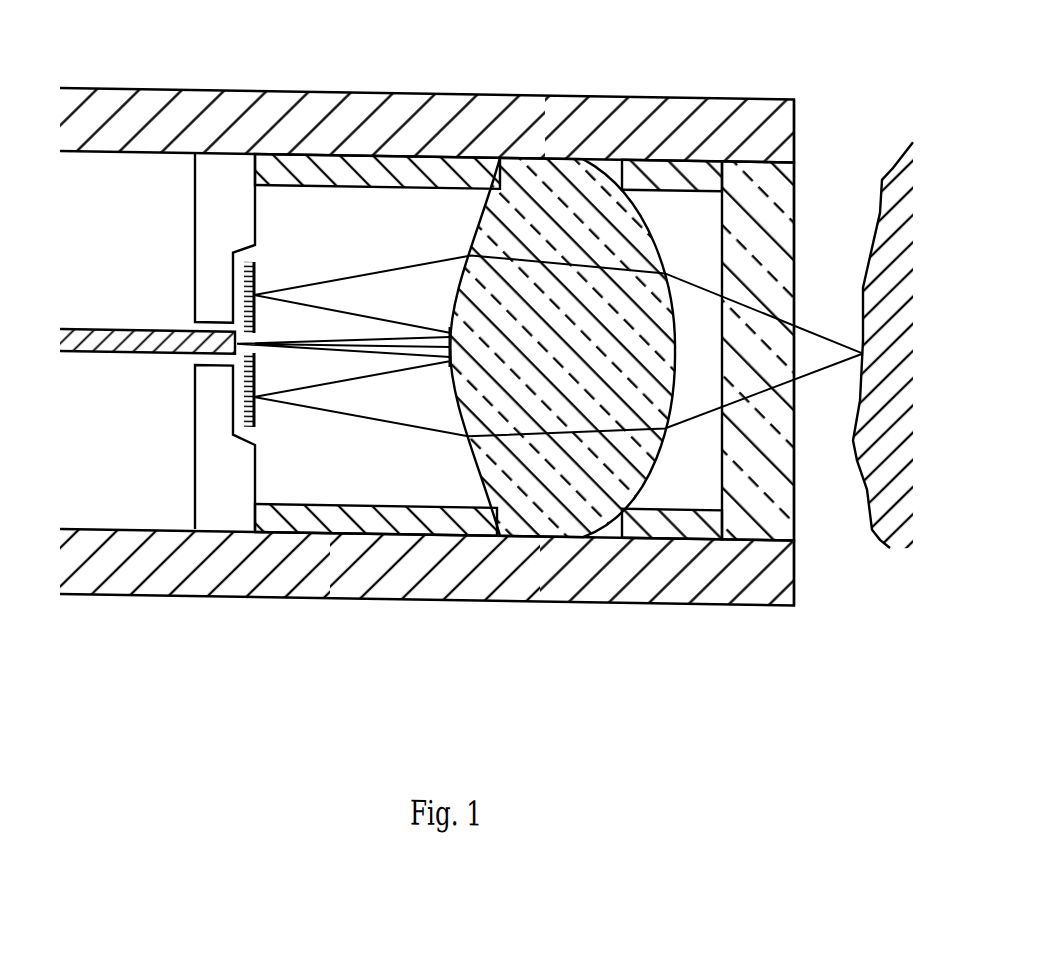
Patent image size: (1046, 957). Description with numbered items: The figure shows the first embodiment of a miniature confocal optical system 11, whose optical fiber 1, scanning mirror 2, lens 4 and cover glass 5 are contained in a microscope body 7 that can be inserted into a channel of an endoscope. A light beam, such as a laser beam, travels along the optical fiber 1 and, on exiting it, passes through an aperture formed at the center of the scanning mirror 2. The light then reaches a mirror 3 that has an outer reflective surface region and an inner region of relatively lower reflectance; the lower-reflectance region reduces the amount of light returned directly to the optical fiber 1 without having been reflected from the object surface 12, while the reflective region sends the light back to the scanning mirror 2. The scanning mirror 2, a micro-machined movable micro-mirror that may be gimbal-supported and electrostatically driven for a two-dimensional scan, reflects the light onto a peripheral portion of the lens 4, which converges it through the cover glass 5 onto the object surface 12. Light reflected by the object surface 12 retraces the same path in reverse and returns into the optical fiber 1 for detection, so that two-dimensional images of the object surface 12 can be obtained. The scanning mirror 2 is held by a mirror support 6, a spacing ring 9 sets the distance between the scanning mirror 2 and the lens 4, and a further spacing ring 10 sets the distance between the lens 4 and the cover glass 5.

The optical fiber 1 is at (147, 351).
The scanning mirror 2 is at (253, 413).
The mirror 3 is at (452, 361).
The lens 4 is at (548, 471).
The cover glass 5 is at (747, 486).
The mirror support 6 is at (222, 190).
The microscope body 7 is at (327, 105).
The spacing ring 9 is at (403, 172).
The spacing ring 10 is at (655, 175).
The miniature confocal optical system 11 is at (478, 345).
The object surface 12 is at (885, 156).